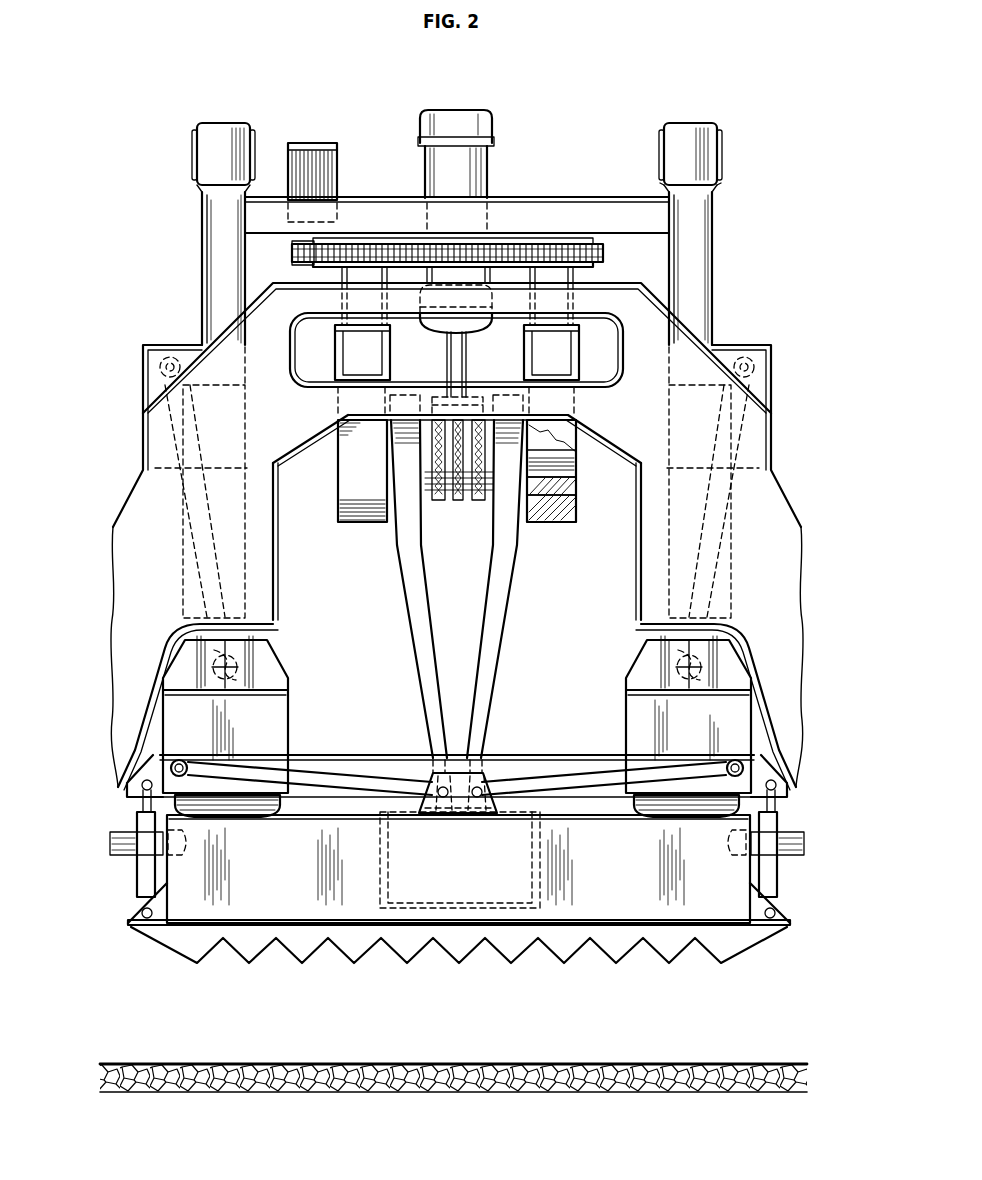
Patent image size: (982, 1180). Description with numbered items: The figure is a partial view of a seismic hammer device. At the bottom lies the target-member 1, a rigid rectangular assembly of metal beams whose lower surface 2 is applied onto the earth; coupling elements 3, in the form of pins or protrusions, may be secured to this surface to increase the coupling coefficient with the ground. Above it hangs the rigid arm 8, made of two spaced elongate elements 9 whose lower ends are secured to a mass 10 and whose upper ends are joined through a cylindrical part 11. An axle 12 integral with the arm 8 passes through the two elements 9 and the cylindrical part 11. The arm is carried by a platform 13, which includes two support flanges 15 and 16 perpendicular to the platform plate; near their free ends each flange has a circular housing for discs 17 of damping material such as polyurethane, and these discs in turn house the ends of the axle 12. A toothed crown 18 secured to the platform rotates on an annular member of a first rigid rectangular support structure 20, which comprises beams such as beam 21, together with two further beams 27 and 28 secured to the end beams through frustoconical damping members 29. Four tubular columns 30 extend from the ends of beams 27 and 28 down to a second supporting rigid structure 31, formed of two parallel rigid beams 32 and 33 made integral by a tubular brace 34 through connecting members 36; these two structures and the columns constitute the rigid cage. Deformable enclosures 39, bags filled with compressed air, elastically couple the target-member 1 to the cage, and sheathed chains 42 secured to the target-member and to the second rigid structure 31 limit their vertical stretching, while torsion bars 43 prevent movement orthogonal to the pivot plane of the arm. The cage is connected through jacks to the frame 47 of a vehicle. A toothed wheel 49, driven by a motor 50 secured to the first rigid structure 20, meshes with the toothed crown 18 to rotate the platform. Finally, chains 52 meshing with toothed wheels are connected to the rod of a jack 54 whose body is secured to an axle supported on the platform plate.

The target-member 1 is at (444, 929).
The surface for application onto the earth 2 is at (350, 931).
The coupling elements 3 is at (455, 951).
The rigid arm 8 is at (462, 664).
The elongate elements 9 is at (494, 612).
The mass 10 is at (530, 806).
The cylindrical part 11 is at (438, 501).
The axle 12 is at (566, 463).
The platform 13 is at (330, 353).
The flange 15 is at (361, 523).
The flange 16 is at (553, 523).
The discs 17 is at (570, 488).
The toothed crown 18 is at (605, 253).
The first rigid rectangular support structure 20 is at (457, 164).
The beam 21 is at (563, 212).
The beam 27 is at (192, 150).
The beam 28 is at (722, 146).
The frustroconical members 29 is at (721, 184).
The tubular columns 30 is at (205, 215).
The second supporting rigid structure 31 is at (456, 770).
The rigid beam 32 is at (270, 718).
The rigid beam 33 is at (644, 711).
The tubular brace 34 is at (392, 768).
The connecting members 36 is at (258, 666).
The deformable enclosures 39 is at (140, 791).
The sheathed chains 42 is at (140, 880).
The torsion bars 43 is at (336, 782).
The frame of a vehicle 47 is at (156, 456).
The toothed wheel 49 is at (292, 254).
The motor 50 is at (316, 143).
The chains 52 is at (459, 501).
The jack 54 is at (495, 114).